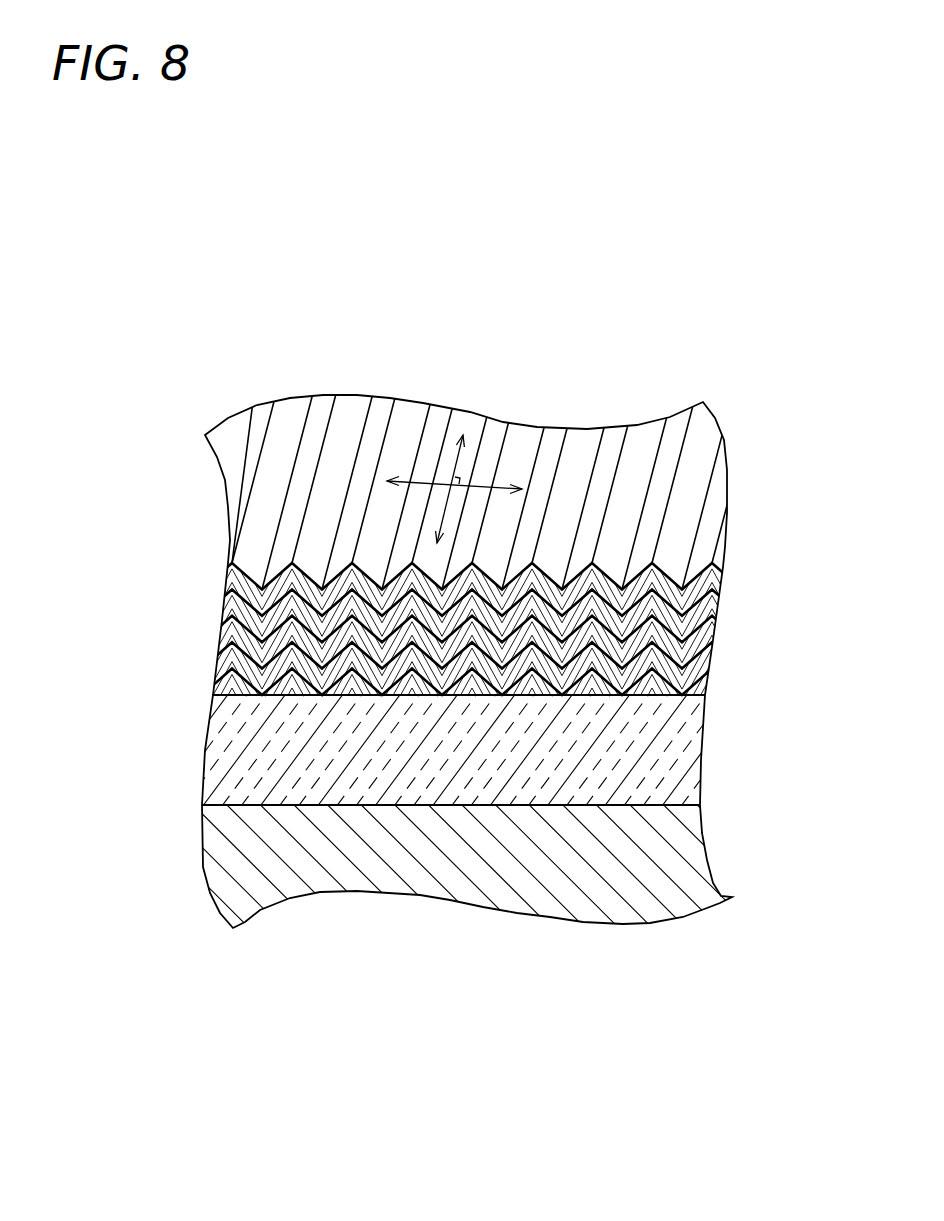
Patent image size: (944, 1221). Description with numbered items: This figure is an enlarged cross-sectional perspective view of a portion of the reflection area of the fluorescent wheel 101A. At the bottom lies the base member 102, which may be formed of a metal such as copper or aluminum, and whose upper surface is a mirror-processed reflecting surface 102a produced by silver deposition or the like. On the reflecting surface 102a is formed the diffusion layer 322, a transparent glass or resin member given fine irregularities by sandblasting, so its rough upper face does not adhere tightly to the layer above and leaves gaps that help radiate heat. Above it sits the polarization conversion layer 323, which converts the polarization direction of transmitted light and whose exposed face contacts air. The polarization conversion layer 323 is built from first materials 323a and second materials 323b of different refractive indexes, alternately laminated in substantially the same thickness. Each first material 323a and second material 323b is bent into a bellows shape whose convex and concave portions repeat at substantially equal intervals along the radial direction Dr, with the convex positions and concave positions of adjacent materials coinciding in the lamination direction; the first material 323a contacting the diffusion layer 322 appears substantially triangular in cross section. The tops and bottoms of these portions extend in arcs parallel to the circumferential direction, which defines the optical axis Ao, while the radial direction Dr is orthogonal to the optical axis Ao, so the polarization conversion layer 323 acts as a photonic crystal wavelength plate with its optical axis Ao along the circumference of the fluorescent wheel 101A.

The fluorescent wheel 101A is at (720, 958).
The base member 102 is at (217, 845).
The reflecting surface 102a is at (203, 800).
The diffusion layer 322 is at (232, 747).
The polarization conversion layer 323 is at (471, 668).
The first material 323a is at (237, 580).
The second material 323b is at (235, 603).
The radial direction Dr is at (422, 482).
The optical axis Ao is at (457, 457).